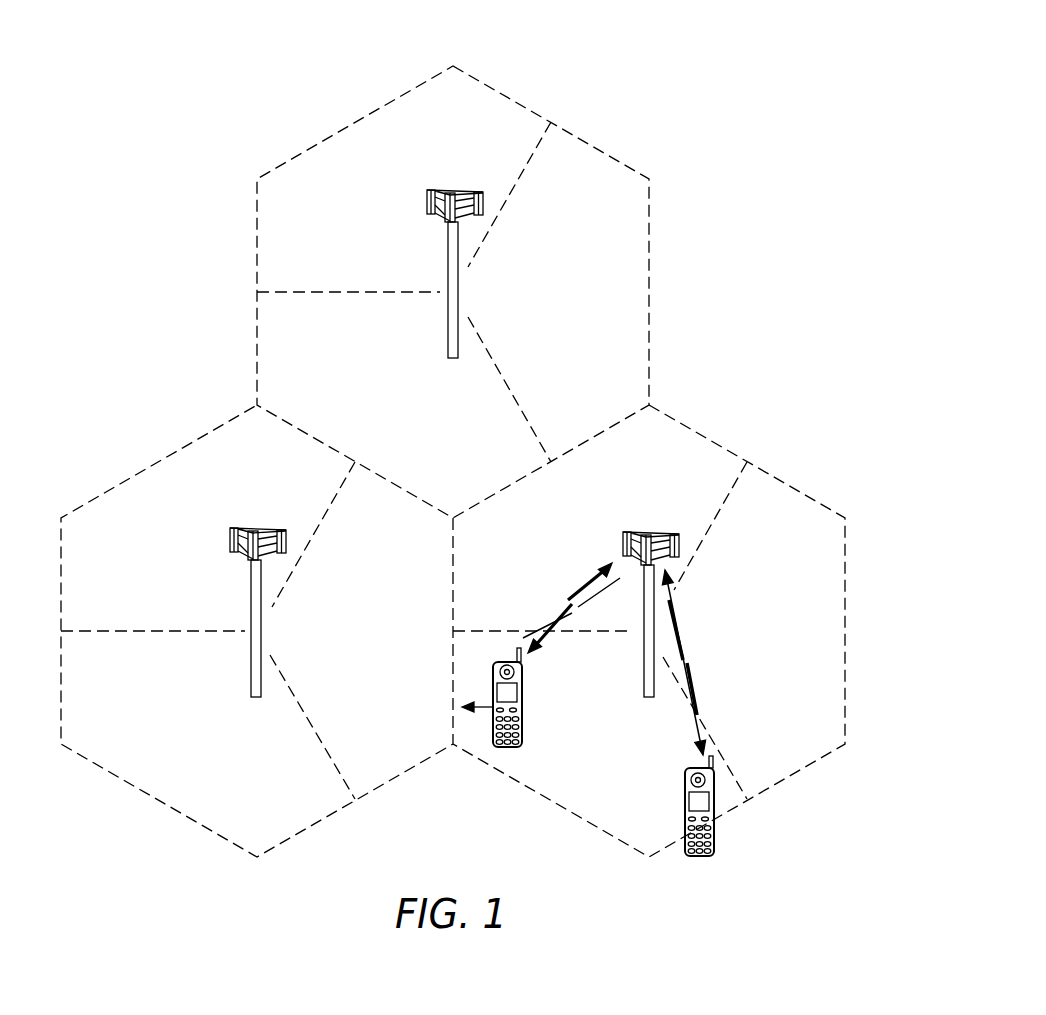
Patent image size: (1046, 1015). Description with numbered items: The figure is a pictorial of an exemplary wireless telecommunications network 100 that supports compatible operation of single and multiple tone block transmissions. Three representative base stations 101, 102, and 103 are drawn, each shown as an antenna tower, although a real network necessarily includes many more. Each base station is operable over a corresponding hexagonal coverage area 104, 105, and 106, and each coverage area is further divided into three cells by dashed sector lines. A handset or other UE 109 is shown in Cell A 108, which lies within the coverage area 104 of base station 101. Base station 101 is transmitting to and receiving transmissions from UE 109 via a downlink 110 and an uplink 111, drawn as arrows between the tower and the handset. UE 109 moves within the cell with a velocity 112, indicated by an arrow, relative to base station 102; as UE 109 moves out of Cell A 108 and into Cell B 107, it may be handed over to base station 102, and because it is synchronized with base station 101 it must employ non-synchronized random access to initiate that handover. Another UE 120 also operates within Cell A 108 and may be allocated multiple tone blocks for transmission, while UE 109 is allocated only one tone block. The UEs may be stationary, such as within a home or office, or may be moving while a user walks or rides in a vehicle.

The wireless telecommunications network 100 is at (637, 70).
The base station 101 is at (653, 638).
The base station 102 is at (251, 660).
The base station 103 is at (448, 322).
The coverage area 104 is at (779, 781).
The coverage area 105 is at (158, 800).
The coverage area 106 is at (649, 292).
The Cell B 107 is at (406, 742).
The Cell A 108 is at (654, 810).
The UE 109 is at (523, 716).
The downlink 110 is at (575, 623).
The uplink 111 is at (582, 586).
The velocity 112 is at (483, 710).
The UE 120 is at (703, 858).